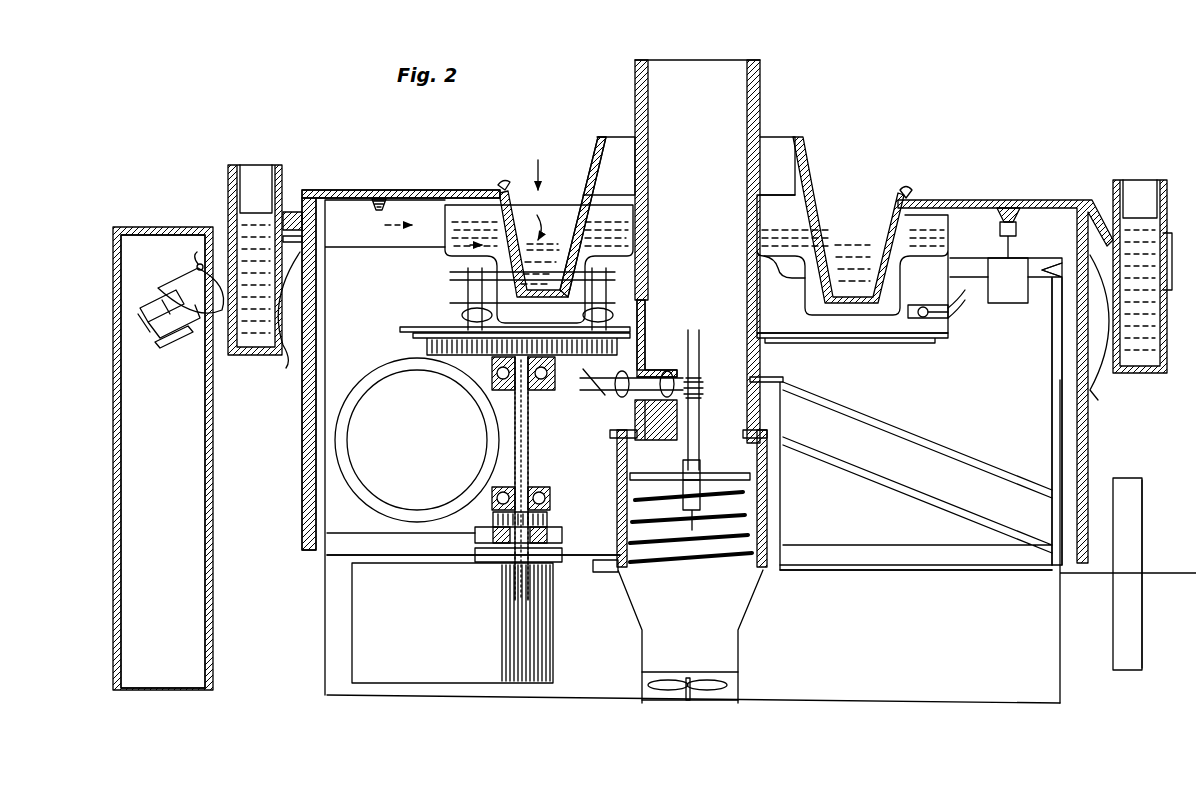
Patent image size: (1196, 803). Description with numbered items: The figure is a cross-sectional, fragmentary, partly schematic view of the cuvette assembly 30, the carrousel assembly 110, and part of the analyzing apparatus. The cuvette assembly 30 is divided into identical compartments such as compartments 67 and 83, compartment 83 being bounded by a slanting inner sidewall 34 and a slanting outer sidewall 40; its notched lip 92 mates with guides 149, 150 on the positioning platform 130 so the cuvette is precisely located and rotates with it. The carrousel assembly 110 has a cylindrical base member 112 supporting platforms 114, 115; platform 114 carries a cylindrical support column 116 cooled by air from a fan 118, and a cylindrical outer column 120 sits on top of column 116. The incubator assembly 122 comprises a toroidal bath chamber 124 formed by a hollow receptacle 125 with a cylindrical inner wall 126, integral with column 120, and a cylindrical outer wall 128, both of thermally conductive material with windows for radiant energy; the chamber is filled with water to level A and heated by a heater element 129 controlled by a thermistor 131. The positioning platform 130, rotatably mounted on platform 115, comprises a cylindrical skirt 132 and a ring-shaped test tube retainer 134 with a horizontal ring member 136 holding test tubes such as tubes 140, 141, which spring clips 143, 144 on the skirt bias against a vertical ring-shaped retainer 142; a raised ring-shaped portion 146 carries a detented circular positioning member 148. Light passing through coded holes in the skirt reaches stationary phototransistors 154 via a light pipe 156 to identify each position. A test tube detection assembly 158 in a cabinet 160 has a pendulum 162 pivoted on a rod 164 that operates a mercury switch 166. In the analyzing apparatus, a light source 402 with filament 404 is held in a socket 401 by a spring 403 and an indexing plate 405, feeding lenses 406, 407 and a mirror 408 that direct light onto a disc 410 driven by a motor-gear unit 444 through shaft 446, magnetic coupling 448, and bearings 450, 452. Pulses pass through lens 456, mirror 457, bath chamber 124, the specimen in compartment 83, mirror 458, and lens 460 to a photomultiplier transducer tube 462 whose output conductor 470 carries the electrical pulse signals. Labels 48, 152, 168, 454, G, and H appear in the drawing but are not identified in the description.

The cuvette assembly 30 is at (592, 133).
The inner sidewall 34 is at (573, 230).
The outer sidewall 40 is at (513, 228).
The plate 48 is at (438, 328).
The compartment 67 is at (860, 190).
The compartment 83 is at (530, 162).
The lip 92 is at (905, 190).
The carrousel assembly 110 is at (650, 715).
The cylindrical base member 112 is at (1062, 705).
The platform 114 is at (940, 572).
The platform 115 is at (1040, 292).
The cylindrical support column 116 is at (650, 103).
The fan 118 is at (738, 684).
The cylindrical outer column 120 is at (762, 102).
The incubator assembly 122 is at (892, 350).
The bath chamber 124 is at (895, 252).
The hollow receptacle 125 is at (950, 312).
The cylindrical inner wall 126 is at (781, 275).
The cylindrical outer wall 128 is at (955, 325).
The heater element 129 is at (855, 343).
The positioning platform 130 is at (345, 162).
The thermistor 131 is at (975, 250).
The cylindrical skirt 132 is at (300, 490).
The test tube retainer 134 is at (215, 214).
The horizontal ring member 136 is at (305, 188).
The test tube 140 is at (238, 160).
The test tube 141 is at (1125, 180).
The vertical ring-shaped retainer 142 is at (222, 226).
The spring clip 143 is at (276, 380).
The spring clip 144 is at (1100, 372).
The raised ring-shaped portion 146 is at (1010, 200).
The circular positioning member 148 is at (372, 206).
The guide 149 is at (500, 182).
The guide 150 is at (928, 160).
The plate 152 is at (1100, 500).
The phototransistors 154 is at (1142, 500).
The light pipe 156 is at (940, 430).
The test tube detection assembly 158 is at (135, 263).
The cabinet 160 is at (120, 310).
The pendulum 162 is at (178, 290).
The rod 164 is at (197, 252).
The mercury switch 166 is at (182, 348).
The nozzle 168 is at (1036, 258).
The socket 401 is at (688, 512).
The light source 402 is at (698, 328).
The spring 403 is at (640, 570).
The filament 404 is at (701, 395).
The indexing plate 405 is at (672, 474).
The lens 406 is at (662, 372).
The lens 407 is at (612, 432).
The mirror 408 is at (608, 386).
The disc 410 is at (413, 343).
The motor-gear unit 444 is at (555, 657).
The shaft 446 is at (530, 452).
The magnetic coupling 448 is at (462, 547).
The bearing 450 is at (552, 500).
The bearing 452 is at (540, 395).
The liquid 454 is at (588, 260).
The lens 456 is at (628, 317).
The mirror 457 is at (617, 276).
The mirror 458 is at (493, 260).
The lens 460 is at (462, 314).
The photomultiplier transducer tube 462 is at (478, 456).
The output conductor 470 is at (455, 527).
The water level A is at (387, 233).
The gap G is at (467, 243).
The liquid level H is at (530, 222).